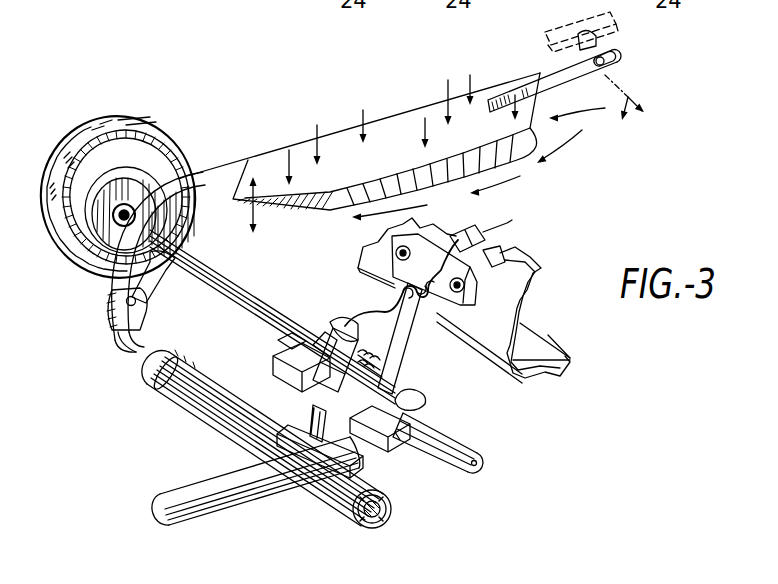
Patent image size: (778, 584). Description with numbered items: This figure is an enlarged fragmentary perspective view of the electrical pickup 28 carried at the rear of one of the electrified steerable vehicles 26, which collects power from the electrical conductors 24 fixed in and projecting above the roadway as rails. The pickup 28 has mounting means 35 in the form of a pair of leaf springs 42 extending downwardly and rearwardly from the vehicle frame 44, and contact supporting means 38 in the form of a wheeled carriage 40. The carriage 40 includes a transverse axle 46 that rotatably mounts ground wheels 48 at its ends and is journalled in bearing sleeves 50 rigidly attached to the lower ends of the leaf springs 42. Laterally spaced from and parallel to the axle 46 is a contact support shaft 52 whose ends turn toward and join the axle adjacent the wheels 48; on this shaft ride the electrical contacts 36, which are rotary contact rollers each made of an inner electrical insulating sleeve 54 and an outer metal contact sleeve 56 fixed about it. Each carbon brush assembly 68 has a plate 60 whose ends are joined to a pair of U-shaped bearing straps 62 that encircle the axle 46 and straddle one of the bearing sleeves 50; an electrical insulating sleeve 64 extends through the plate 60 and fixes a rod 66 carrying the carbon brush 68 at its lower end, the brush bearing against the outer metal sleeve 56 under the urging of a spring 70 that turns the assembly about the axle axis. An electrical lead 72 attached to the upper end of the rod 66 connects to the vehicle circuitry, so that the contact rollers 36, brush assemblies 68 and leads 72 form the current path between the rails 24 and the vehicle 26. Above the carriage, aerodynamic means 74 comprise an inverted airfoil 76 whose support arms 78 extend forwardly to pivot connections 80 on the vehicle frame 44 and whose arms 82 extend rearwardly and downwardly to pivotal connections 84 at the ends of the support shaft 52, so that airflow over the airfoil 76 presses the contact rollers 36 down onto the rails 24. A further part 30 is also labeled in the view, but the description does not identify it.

The electrical conductors 24 is at (188, 497).
The electrified steerable vehicle 26 is at (554, 331).
The electrical pickup 28 is at (380, 97).
The rail 30 is at (573, 7).
The mounting means 35 is at (443, 343).
The electrical contacts 36 is at (162, 405).
The contact supporting means 38 is at (493, 8).
The wheeled carriage 40 is at (468, 434).
The leaf springs 42 is at (392, 378).
The vehicle frame 44 is at (618, 28).
The axle 46 is at (452, 462).
The ground wheels 48 is at (113, 117).
The bearing sleeves 50 is at (365, 392).
The contact support shaft 52 is at (123, 337).
The inner electrical insulating sleeve 54 is at (391, 509).
The outer metal contact sleeve 56 is at (343, 512).
The plate 60 is at (290, 405).
The U-shaped bearing straps 62 is at (320, 330).
The electrical insulating sleeve 64 is at (285, 346).
The rod 66 is at (334, 324).
The carbon brush assembly 68 is at (300, 483).
The spring 70 is at (420, 333).
The electrical lead 72 is at (385, 290).
The aerodynamic means 74 is at (437, 93).
The inverted airfoil 76 is at (250, 158).
The support arms 78 is at (535, 80).
The pivot connections 80 is at (604, 63).
The arms 82 is at (127, 284).
The pivotal connections 84 is at (106, 308).